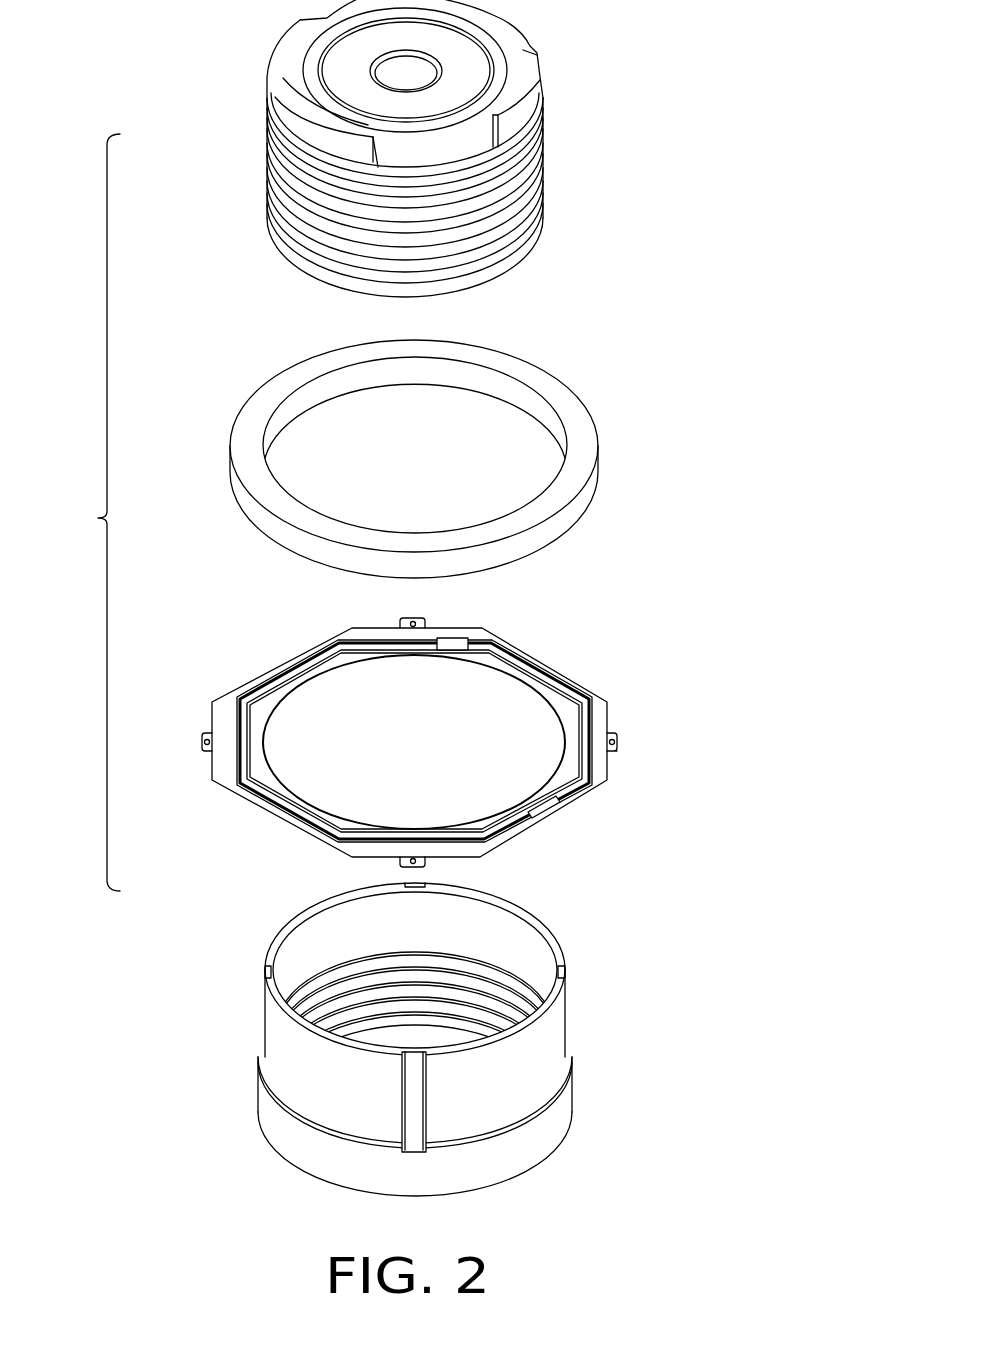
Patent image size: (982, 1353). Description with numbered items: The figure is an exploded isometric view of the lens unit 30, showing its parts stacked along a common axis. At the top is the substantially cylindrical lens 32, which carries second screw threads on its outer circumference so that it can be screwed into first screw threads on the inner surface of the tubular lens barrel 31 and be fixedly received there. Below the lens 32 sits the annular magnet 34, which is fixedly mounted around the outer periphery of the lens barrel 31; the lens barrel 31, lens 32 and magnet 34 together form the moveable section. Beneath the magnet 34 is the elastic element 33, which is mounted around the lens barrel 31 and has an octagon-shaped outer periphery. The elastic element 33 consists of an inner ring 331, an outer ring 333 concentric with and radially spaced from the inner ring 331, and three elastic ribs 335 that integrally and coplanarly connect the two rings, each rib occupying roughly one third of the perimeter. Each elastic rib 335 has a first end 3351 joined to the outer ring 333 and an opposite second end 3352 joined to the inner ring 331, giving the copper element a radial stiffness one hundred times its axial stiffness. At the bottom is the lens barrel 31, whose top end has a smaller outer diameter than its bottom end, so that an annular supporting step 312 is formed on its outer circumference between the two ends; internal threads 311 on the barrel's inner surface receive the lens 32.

The lens unit 30 is at (88, 512).
The lens barrel 31 is at (408, 1022).
The internal thread 311 is at (467, 977).
The annular supporting step 312 is at (550, 1107).
The lens 32 is at (285, 159).
The elastic element 33 is at (432, 712).
The inner ring 331 is at (565, 715).
The outer ring 333 is at (527, 655).
The elastic ribs 335 is at (555, 692).
The first end 3351 is at (557, 800).
The second end 3352 is at (477, 640).
The magnet 34 is at (247, 452).